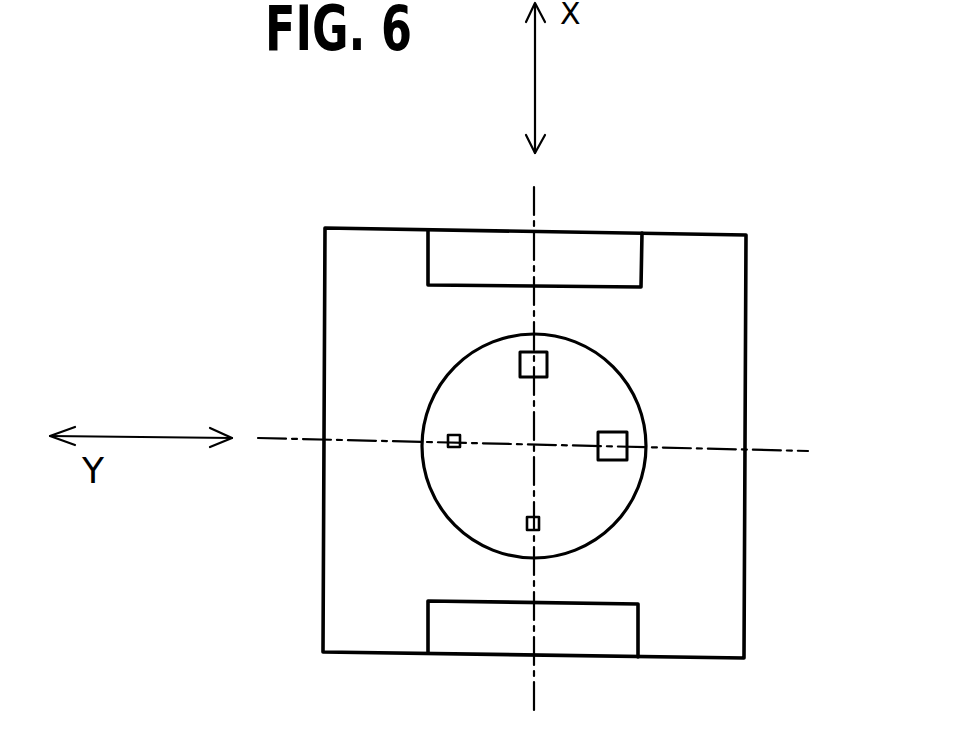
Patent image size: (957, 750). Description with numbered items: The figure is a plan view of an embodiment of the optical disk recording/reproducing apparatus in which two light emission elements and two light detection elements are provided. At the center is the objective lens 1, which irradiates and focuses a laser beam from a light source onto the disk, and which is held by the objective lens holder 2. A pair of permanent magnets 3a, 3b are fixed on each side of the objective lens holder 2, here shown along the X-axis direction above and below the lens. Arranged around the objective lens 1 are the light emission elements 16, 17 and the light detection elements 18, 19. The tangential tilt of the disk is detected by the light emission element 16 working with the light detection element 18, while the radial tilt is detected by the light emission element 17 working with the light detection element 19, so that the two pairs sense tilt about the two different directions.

The objective lens 1 is at (475, 352).
The objective lens holder 2 is at (720, 587).
The permanent magnet 3a is at (605, 245).
The permanent magnet 3b is at (618, 643).
The light emission element 16 is at (539, 523).
The light emission element 17 is at (448, 443).
The light detection element 18 is at (547, 362).
The light detection element 19 is at (627, 432).